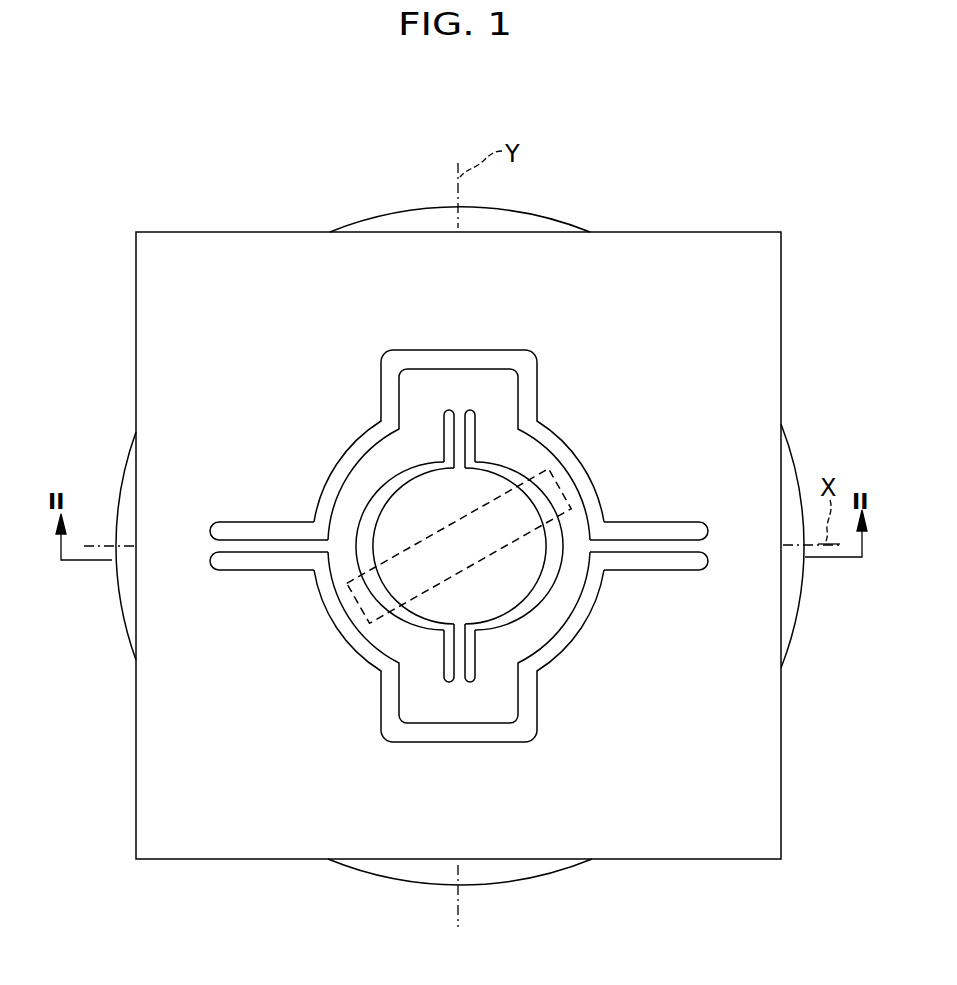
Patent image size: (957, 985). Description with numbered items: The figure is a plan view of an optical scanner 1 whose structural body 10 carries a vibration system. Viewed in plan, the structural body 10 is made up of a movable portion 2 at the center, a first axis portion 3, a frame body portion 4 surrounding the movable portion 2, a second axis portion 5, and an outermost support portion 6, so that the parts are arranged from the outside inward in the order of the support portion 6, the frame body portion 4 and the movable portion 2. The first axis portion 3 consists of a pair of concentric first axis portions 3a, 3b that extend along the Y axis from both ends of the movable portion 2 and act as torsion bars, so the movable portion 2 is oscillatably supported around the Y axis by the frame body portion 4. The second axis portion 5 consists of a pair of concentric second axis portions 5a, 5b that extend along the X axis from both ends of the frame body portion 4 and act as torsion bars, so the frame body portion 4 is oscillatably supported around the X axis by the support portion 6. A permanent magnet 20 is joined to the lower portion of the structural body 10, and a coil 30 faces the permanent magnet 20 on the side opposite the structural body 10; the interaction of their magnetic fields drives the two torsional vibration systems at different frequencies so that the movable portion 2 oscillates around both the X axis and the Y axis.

The optical scanner 1 is at (652, 108).
The movable portion 2 is at (482, 490).
The first axis portion 3 is at (365, 552).
The first axis portion 3a is at (452, 438).
The first axis portion 3b is at (455, 655).
The frame body portion 4 is at (570, 487).
The second axis portion 5 is at (445, 636).
The second axis portion 5a is at (640, 547).
The second axis portion 5b is at (247, 548).
The support portion 6 is at (197, 255).
The structural body 10 is at (724, 230).
The permanent magnet 20 is at (552, 483).
The coil 30 is at (415, 222).